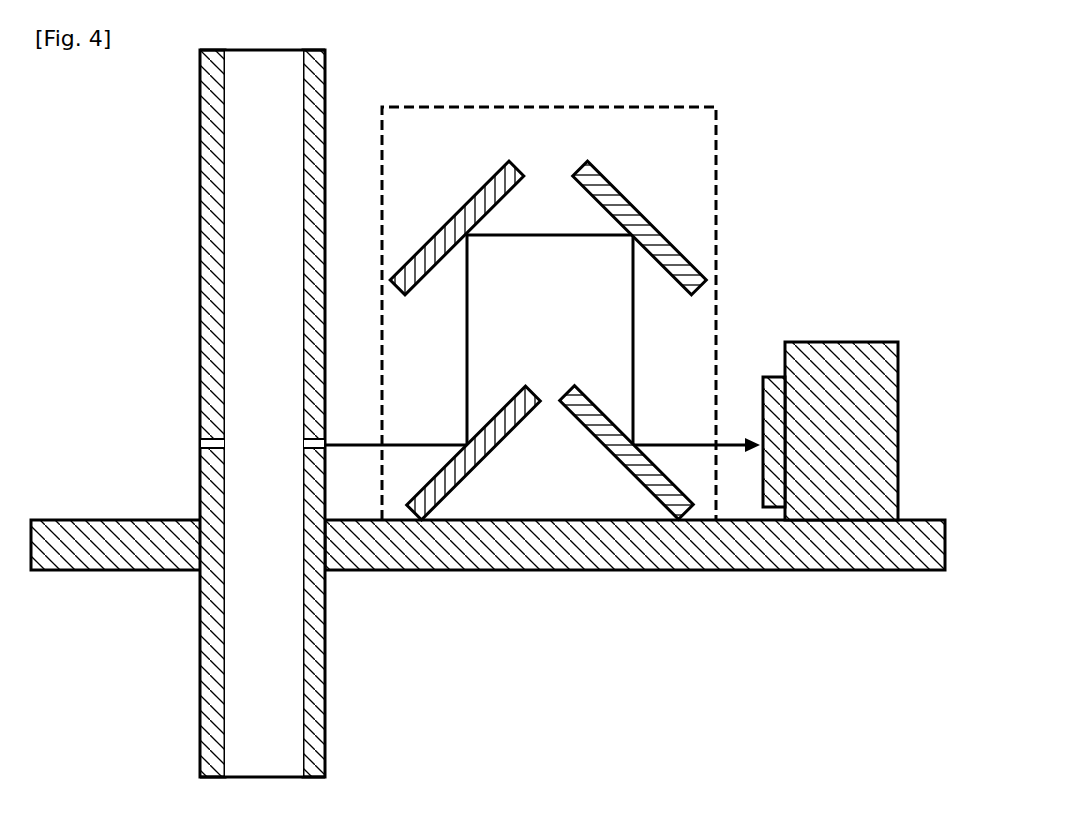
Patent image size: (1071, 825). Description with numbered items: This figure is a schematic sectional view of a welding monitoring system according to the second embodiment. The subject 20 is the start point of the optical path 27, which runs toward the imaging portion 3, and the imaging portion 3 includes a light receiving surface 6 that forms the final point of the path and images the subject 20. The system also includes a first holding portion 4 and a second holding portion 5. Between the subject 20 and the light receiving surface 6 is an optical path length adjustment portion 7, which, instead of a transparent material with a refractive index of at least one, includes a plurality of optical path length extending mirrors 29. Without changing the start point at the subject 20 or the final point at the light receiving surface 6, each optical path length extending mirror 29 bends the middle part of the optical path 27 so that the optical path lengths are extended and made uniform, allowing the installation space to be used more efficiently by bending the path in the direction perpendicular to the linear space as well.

The imaging portion 3 is at (845, 340).
The first holding portion 4 is at (650, 570).
The second holding portion 5 is at (108, 570).
The light receiving surface 6 is at (755, 398).
The optical path length adjustment portion 7 is at (716, 175).
The subject 20 is at (200, 278).
The optical paths 27 is at (412, 440).
The optical path length extending mirror 29 is at (460, 207).